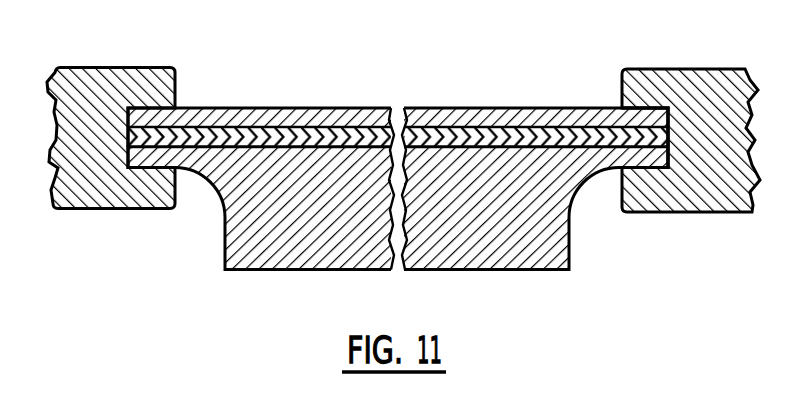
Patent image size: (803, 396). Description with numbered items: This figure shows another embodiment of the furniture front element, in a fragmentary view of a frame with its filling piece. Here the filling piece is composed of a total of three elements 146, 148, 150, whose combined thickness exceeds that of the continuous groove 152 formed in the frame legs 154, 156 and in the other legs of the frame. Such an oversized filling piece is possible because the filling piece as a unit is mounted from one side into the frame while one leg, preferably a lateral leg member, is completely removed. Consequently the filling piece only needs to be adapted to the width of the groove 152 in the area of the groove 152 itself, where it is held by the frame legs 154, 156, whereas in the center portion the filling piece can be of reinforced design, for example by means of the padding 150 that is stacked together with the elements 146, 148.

The filling piece element 146 is at (505, 121).
The filling piece element 148 is at (430, 138).
The padding 150 is at (562, 247).
The groove 152 is at (680, 135).
The frame leg 154 is at (710, 190).
The frame leg 156 is at (116, 195).